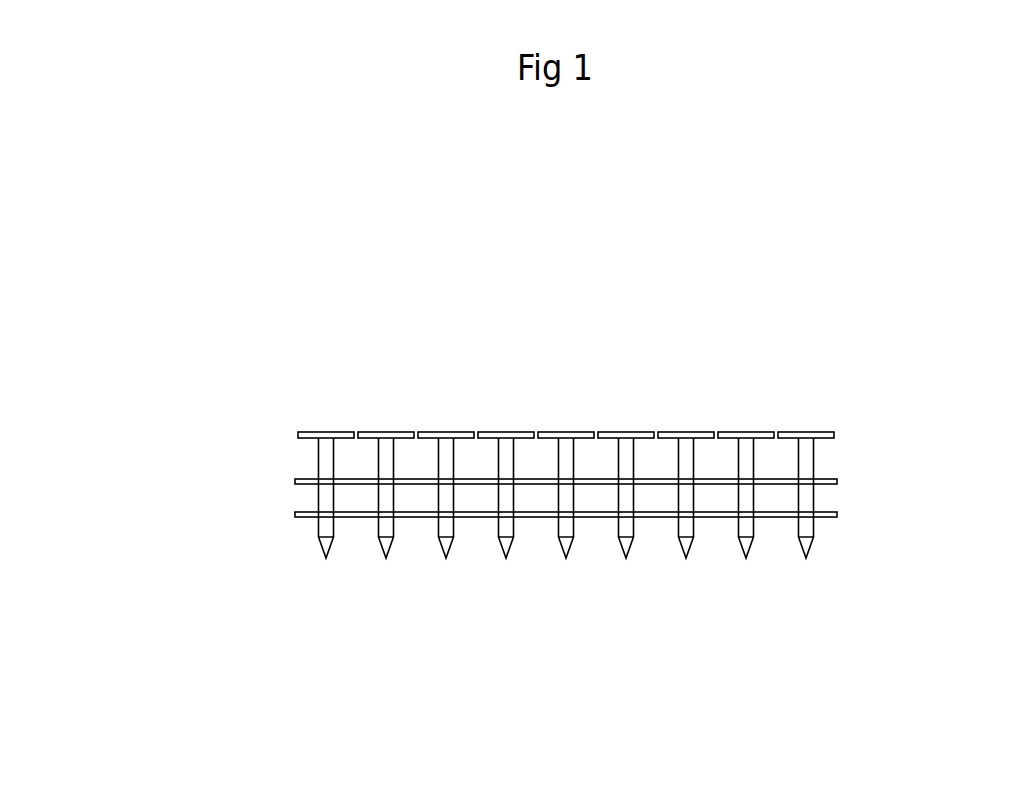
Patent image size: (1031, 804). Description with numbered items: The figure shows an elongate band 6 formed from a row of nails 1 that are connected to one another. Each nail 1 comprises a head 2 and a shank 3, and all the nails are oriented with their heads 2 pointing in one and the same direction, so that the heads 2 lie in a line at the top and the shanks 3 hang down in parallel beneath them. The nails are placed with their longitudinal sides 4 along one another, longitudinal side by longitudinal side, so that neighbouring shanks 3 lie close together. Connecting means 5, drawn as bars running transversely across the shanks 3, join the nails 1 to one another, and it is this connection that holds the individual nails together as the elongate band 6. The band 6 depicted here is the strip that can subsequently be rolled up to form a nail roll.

The nail 1 is at (328, 532).
The head 2 is at (307, 433).
The shank 3 is at (324, 466).
The longitudinal side 4 is at (514, 527).
The connecting means 5 is at (837, 484).
The elongate band 6 is at (703, 388).